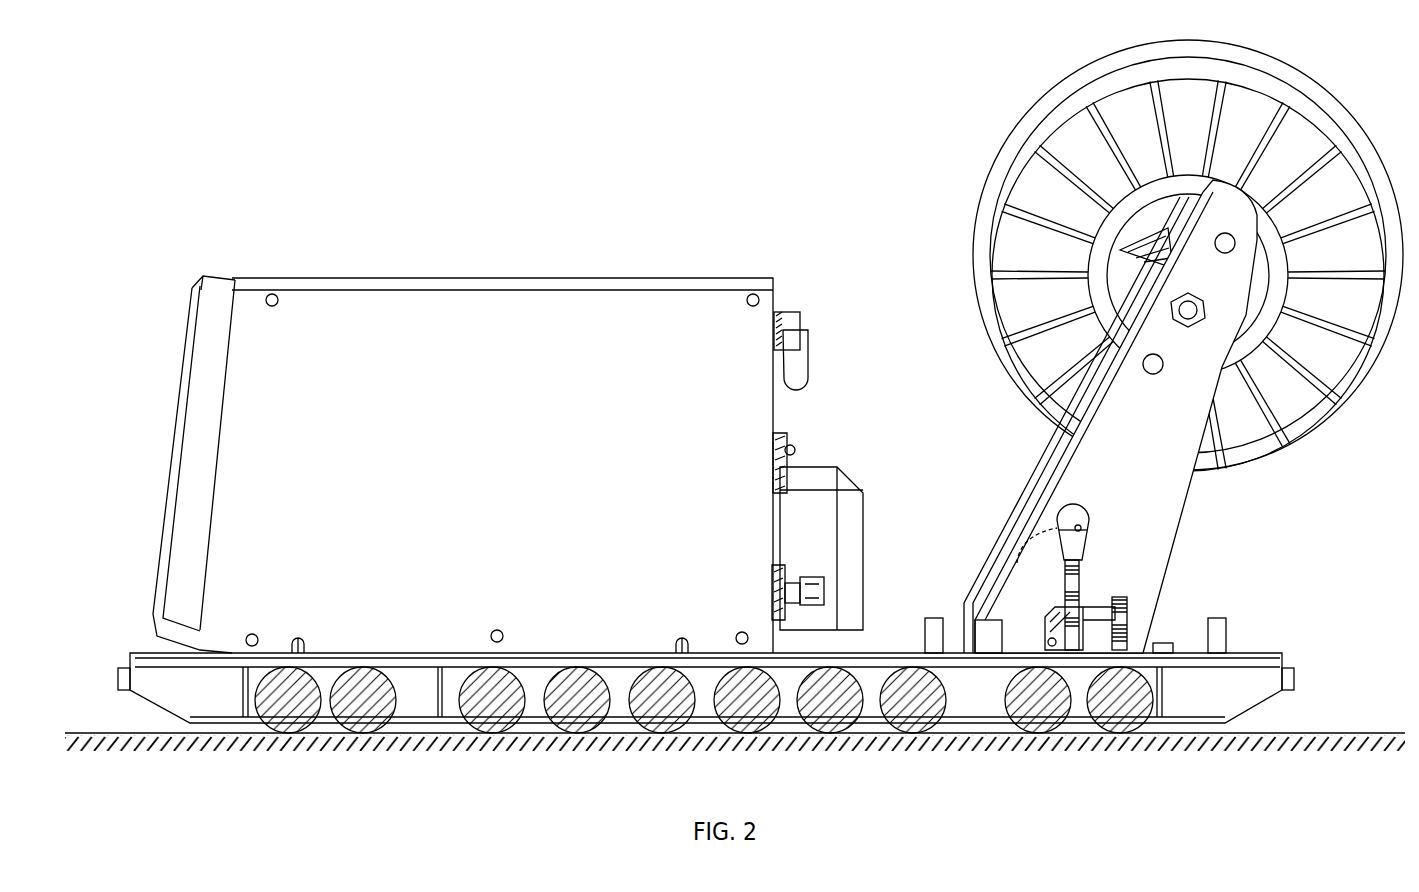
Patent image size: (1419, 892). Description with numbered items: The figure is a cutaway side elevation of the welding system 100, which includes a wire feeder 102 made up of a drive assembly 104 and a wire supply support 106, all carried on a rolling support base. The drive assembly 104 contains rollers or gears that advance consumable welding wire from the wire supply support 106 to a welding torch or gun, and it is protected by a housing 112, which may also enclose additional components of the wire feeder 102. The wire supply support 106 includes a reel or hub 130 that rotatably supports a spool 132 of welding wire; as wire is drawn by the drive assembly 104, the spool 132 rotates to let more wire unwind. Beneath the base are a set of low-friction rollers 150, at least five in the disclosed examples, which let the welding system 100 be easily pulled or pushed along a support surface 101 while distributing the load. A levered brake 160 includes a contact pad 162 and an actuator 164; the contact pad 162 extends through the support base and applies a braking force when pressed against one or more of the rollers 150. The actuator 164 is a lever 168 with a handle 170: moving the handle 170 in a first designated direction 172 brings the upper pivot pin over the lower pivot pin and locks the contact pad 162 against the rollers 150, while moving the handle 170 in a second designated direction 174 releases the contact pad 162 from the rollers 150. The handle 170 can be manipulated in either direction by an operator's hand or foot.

The welding system 100 is at (138, 96).
The support surface 101 is at (132, 732).
The wire feeder 102 is at (272, 192).
The drive assembly 104 is at (508, 449).
The wire supply support 106 is at (1172, 500).
The housing 112 is at (398, 277).
The hub 130 is at (1188, 261).
The spool 132 is at (1047, 83).
The rollers 150 is at (1128, 728).
The brake 160 is at (1052, 483).
The contact pad 162 is at (1133, 658).
The actuator 164 is at (1124, 500).
The lever 168 is at (1093, 595).
The handle 170 is at (1078, 500).
The first designated direction 172 is at (1078, 528).
The second designated direction 174 is at (1023, 580).